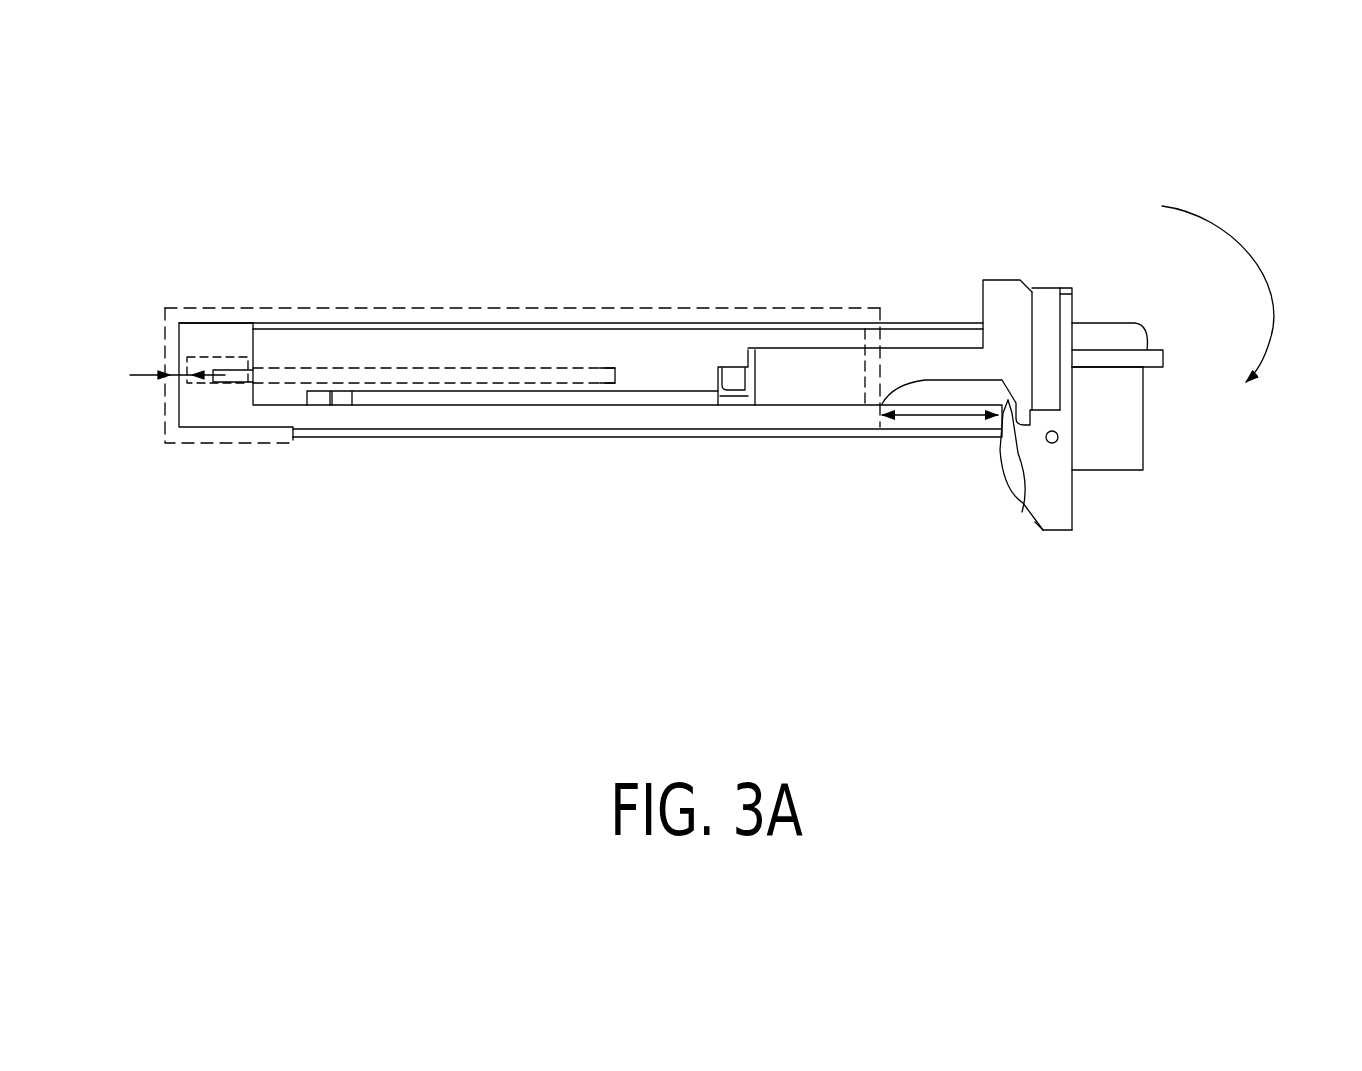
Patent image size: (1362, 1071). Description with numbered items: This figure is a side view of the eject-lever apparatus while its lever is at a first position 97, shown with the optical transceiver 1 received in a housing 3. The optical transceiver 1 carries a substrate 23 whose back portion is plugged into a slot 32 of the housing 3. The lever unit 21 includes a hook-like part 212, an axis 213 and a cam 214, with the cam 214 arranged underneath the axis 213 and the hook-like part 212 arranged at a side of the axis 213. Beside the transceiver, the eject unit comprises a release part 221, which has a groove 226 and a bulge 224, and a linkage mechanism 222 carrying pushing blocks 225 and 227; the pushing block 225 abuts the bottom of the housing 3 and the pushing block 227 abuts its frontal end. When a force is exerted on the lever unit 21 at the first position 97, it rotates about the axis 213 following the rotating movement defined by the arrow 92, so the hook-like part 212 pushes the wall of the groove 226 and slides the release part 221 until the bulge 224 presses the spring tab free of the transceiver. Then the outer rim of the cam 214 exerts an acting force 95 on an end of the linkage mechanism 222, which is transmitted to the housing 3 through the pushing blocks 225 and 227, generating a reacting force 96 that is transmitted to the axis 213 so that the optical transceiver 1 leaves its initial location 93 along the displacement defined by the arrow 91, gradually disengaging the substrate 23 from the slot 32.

The optical transceiver 1 is at (104, 304).
The housing 3 is at (589, 307).
The lever unit 21 is at (1080, 405).
The substrate 23 is at (318, 380).
The slot 32 is at (206, 414).
The arrow defining displacement 91 is at (958, 303).
The arrow defining rotating movement 92 is at (1190, 203).
The initial location 93 is at (1038, 273).
The acting force 95 is at (213, 368).
The reacting force 96 is at (130, 375).
The first position 97 is at (1080, 300).
The hook-like part 212 is at (1022, 512).
The axis 213 is at (1057, 441).
The cam 214 is at (1045, 515).
The release part 221 is at (990, 303).
The linkage mechanism 222 is at (590, 414).
The bulge 224 is at (737, 378).
The pushing block 225 is at (245, 332).
The groove 226 is at (955, 377).
The pushing block 227 is at (935, 420).